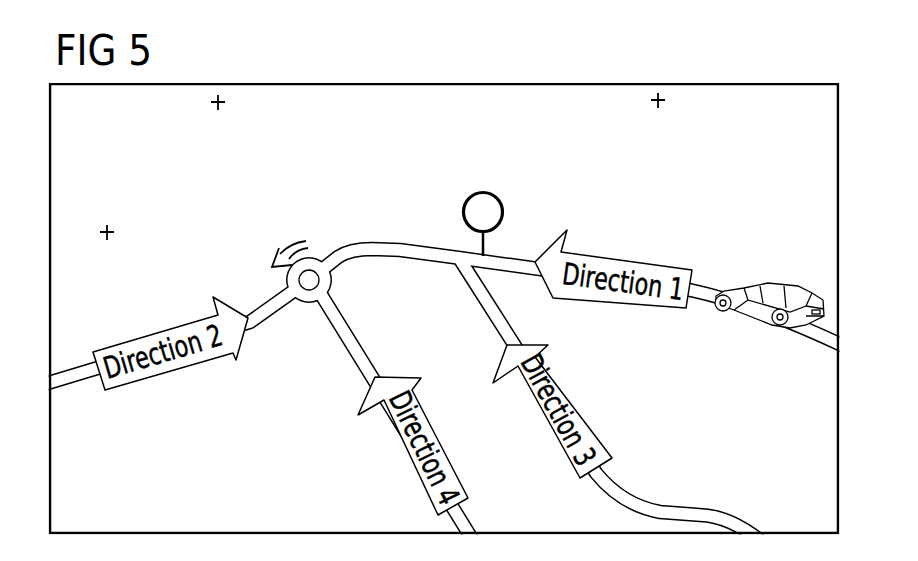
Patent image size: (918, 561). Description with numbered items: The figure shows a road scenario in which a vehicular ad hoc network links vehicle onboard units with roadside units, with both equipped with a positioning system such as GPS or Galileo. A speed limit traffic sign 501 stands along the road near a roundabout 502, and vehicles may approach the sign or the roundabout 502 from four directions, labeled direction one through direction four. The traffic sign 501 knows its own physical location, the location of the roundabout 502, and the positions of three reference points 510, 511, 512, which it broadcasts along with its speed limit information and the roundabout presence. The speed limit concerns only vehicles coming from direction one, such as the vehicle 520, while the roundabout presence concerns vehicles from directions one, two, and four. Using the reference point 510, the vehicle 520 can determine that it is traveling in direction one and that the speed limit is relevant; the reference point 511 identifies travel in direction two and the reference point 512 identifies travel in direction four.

The speed limit traffic sign 501 is at (484, 192).
The roundabout 502 is at (310, 258).
The reference point 510 is at (110, 225).
The reference point 511 is at (655, 110).
The reference point 512 is at (215, 111).
The vehicle 520 is at (758, 286).